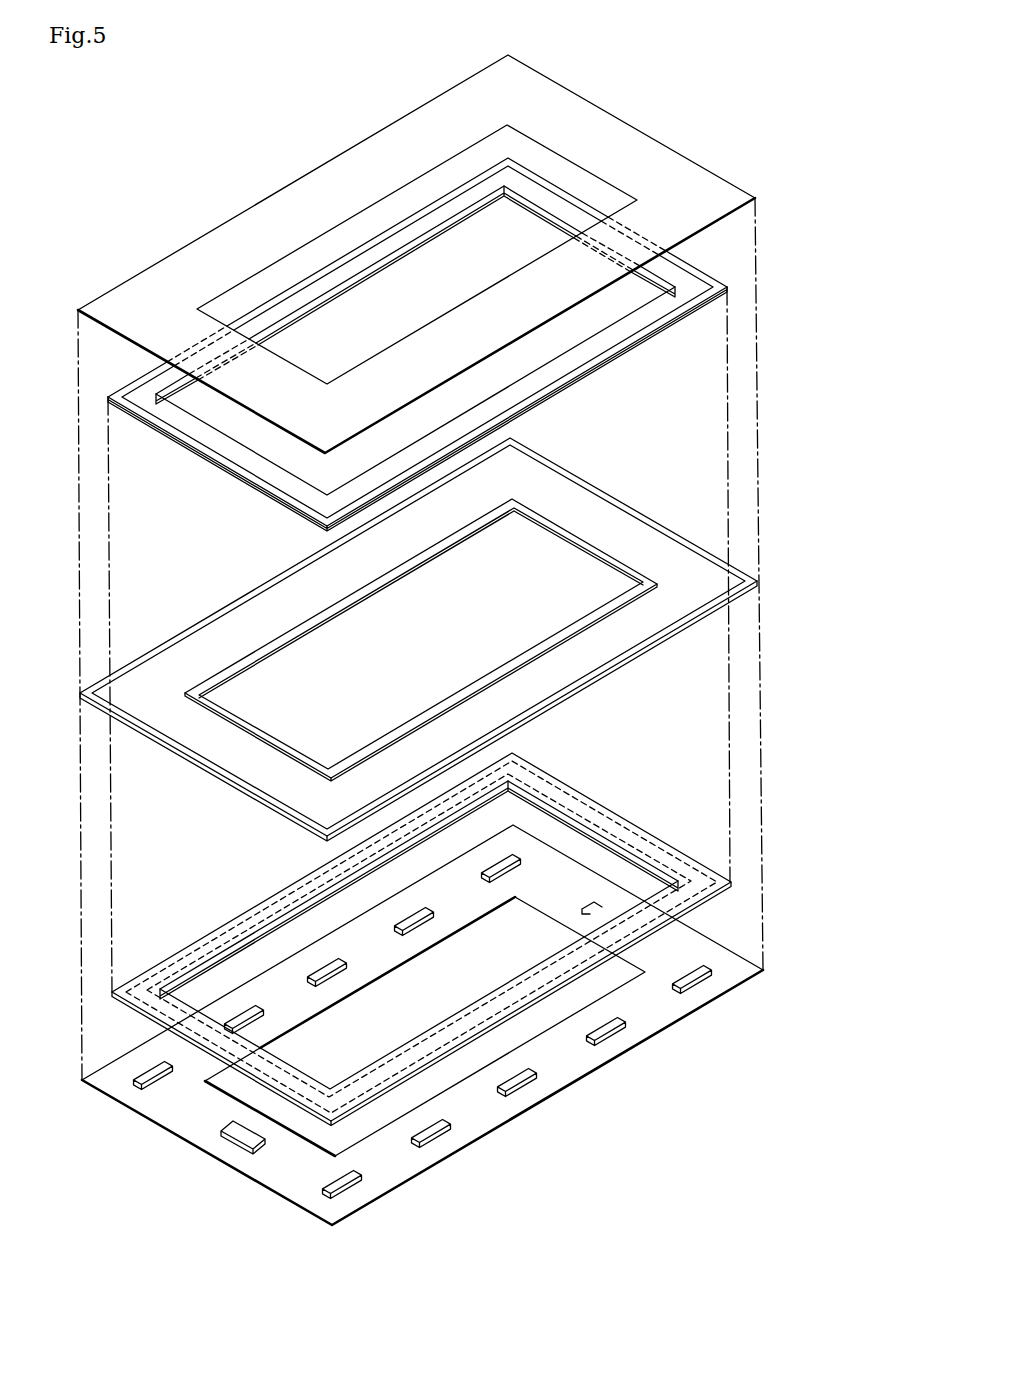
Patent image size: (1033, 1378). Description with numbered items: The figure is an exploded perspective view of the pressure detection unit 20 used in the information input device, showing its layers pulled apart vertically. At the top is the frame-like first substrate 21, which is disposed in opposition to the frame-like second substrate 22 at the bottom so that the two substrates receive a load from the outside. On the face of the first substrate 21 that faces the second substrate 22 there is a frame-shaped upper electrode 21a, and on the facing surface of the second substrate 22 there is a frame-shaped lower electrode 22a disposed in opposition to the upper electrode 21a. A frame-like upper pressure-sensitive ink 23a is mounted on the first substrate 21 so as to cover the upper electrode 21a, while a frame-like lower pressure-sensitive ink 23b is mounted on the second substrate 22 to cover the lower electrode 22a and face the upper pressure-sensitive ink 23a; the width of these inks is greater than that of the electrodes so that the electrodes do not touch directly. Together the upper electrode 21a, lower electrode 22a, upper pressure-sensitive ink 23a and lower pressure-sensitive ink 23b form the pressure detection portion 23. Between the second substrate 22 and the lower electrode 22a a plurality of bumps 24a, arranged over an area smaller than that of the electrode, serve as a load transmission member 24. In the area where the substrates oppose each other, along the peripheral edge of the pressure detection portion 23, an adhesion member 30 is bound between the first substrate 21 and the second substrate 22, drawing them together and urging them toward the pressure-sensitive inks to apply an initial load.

The pressure detection unit 20 is at (742, 132).
The first substrate 21 is at (338, 177).
The upper electrode 21a is at (607, 343).
The second substrate 22 is at (243, 1167).
The lower electrode 22a is at (598, 812).
The pressure detection portion 23 is at (174, 453).
The upper pressure-sensitive ink 23a is at (247, 483).
The lower pressure-sensitive ink 23b is at (247, 928).
The load transmission member 24 is at (439, 1155).
The bumps 24a is at (427, 923).
The adhesion member 30 is at (333, 618).